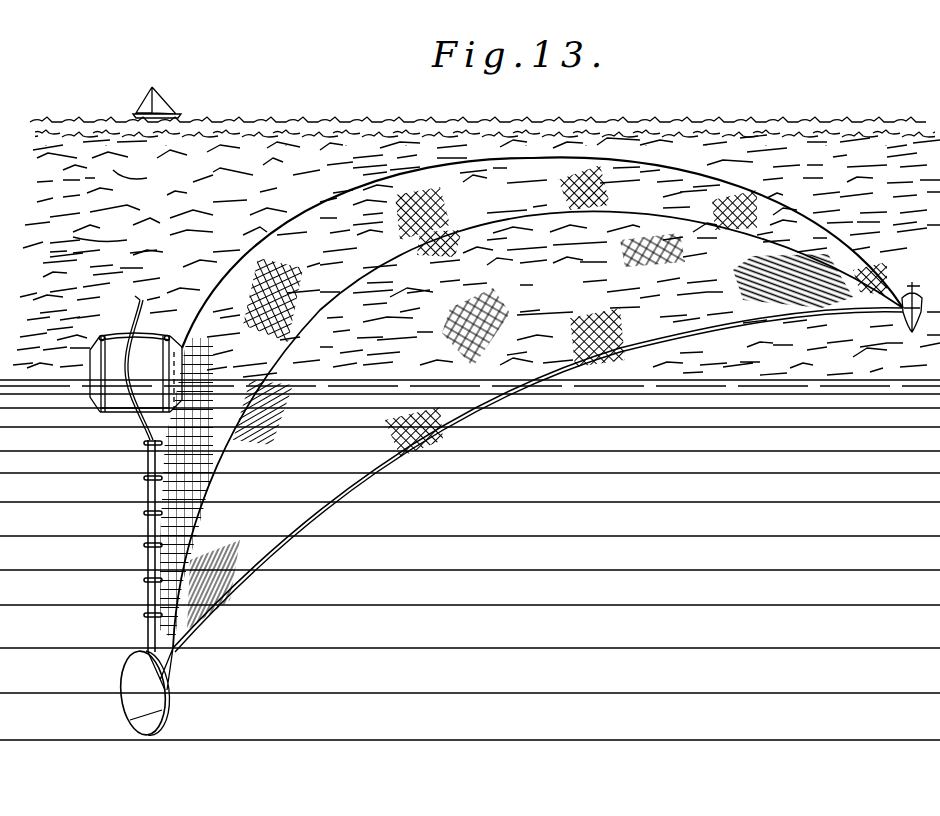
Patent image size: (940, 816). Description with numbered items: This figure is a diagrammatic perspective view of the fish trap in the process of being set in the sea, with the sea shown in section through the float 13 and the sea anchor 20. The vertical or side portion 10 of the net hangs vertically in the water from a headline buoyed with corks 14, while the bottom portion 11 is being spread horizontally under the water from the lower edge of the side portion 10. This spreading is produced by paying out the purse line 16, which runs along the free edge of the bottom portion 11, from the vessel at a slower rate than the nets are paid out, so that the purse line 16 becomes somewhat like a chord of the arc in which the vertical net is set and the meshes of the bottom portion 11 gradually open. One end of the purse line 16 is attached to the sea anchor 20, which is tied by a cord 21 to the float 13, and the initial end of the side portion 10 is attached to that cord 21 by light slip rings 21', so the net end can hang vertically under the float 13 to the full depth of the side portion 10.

The vertical or side portion 10 is at (450, 212).
The bottom portion 11 is at (507, 307).
The float 13 is at (136, 368).
The corks 14 is at (326, 203).
The purse line 16 is at (400, 458).
The sea anchor 20 is at (130, 688).
The cord 21 is at (129, 540).
The light slip rings 21' is at (132, 529).